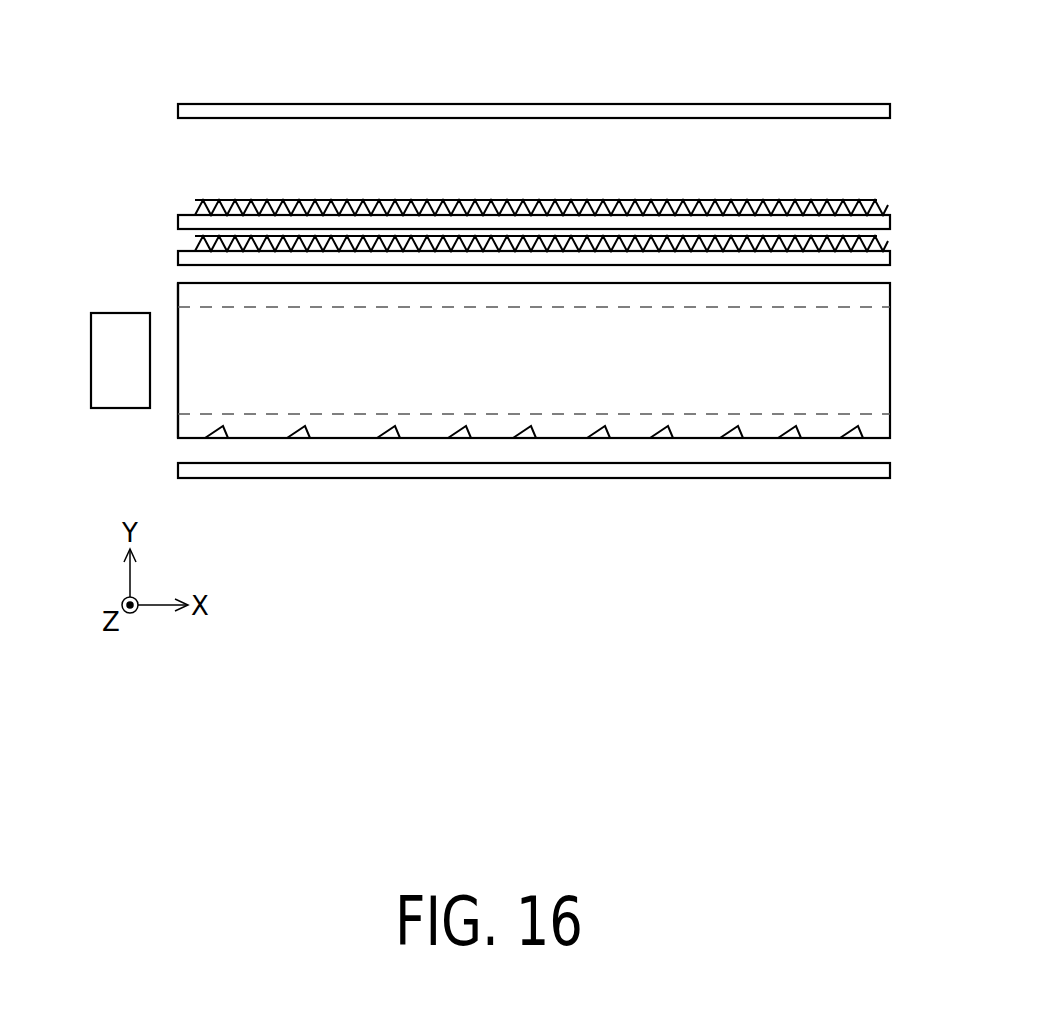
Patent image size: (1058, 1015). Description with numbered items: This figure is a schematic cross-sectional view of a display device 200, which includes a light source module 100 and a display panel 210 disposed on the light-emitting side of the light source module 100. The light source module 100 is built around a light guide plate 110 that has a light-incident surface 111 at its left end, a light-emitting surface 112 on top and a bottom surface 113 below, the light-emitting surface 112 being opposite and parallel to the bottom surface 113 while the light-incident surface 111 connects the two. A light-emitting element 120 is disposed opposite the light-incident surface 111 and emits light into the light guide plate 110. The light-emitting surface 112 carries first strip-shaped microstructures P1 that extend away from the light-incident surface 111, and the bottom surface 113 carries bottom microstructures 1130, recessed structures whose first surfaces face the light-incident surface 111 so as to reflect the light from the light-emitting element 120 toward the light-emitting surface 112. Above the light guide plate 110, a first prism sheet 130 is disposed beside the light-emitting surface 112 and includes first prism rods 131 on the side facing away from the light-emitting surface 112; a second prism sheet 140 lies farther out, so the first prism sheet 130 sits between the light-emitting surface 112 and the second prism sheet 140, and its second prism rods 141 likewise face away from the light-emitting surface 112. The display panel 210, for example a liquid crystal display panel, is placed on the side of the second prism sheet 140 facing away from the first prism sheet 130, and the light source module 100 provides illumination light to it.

The display device 200 is at (111, 37).
The display panel 210 is at (262, 118).
The light source module 100 is at (143, 183).
The light guide plate 110 is at (873, 357).
The light-incident surface 111 is at (166, 357).
The light-emitting surface 112 is at (777, 305).
The bottom surface 113 is at (819, 417).
The bottom microstructures 1130 is at (797, 438).
The light-emitting element 120 is at (122, 390).
The first prism sheet 130 is at (880, 257).
The first prism rods 131 is at (196, 246).
The second prism sheet 140 is at (880, 221).
The second prism rods 141 is at (196, 200).
The first strip-shaped microstructures P1 is at (880, 287).